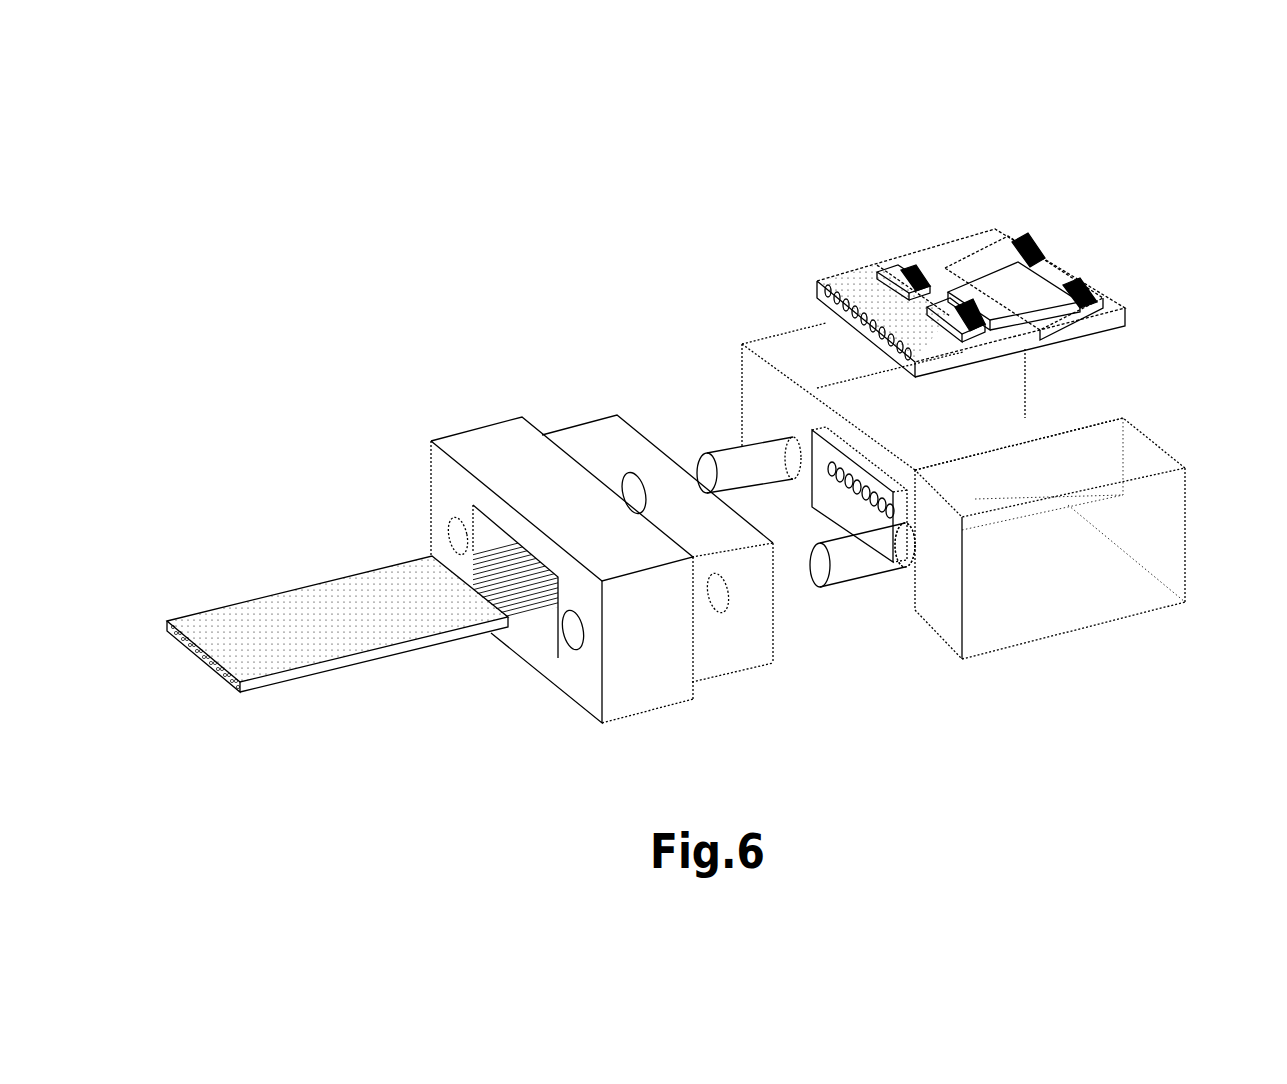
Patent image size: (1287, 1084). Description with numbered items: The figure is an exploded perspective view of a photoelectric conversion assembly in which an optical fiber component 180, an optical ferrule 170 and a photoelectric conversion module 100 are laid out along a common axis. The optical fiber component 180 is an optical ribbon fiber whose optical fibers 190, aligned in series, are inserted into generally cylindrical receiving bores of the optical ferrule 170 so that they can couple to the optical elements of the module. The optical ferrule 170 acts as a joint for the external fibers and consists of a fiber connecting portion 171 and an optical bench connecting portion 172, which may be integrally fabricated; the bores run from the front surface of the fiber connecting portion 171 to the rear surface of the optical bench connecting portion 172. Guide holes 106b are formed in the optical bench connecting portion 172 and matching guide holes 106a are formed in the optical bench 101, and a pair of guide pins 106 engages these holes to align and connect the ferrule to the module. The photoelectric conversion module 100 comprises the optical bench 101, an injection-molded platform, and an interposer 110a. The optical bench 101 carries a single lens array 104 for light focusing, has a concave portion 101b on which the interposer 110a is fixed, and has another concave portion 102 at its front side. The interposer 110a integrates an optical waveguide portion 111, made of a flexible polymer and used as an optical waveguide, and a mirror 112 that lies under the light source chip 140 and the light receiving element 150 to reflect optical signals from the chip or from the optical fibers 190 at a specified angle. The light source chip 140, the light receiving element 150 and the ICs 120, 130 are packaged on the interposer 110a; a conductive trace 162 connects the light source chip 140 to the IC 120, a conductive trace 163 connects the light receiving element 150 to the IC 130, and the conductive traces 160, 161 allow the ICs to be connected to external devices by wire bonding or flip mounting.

The photoelectric conversion module 100 is at (757, 215).
The optical bench 101 is at (991, 525).
The concave portion 101b is at (1070, 418).
The concave portion 102 is at (835, 500).
The lens array 104 is at (801, 467).
The guide pins 106 is at (845, 570).
The guide holes 106a is at (897, 547).
The guide holes 106b is at (722, 600).
The interposer 110a is at (953, 284).
The optical waveguide portion 111 is at (870, 324).
The mirror 112 is at (958, 333).
The IC 120 is at (952, 252).
The IC 130 is at (1076, 285).
The light source chip 140 is at (860, 221).
The light receiving element 150 is at (943, 311).
The conductive trace 160 is at (1092, 285).
The conductive trace 161 is at (1023, 240).
The conductive trace 162 is at (903, 276).
The conductive trace 163 is at (983, 355).
The optical ferrule 170 is at (478, 342).
The fiber connecting portion 171 is at (503, 440).
The optical bench connecting portion 172 is at (582, 430).
The optical fiber component 180 is at (313, 593).
The optical fibers 190 is at (477, 572).